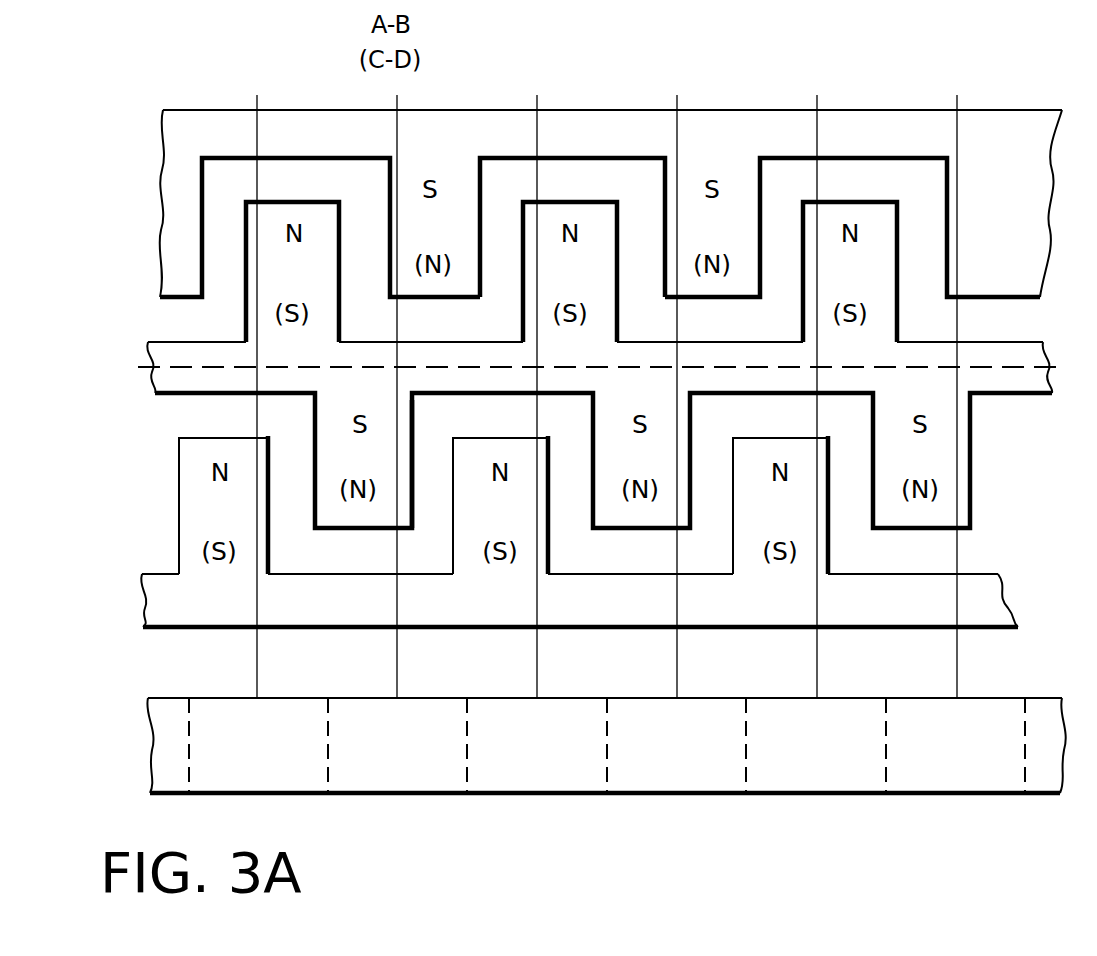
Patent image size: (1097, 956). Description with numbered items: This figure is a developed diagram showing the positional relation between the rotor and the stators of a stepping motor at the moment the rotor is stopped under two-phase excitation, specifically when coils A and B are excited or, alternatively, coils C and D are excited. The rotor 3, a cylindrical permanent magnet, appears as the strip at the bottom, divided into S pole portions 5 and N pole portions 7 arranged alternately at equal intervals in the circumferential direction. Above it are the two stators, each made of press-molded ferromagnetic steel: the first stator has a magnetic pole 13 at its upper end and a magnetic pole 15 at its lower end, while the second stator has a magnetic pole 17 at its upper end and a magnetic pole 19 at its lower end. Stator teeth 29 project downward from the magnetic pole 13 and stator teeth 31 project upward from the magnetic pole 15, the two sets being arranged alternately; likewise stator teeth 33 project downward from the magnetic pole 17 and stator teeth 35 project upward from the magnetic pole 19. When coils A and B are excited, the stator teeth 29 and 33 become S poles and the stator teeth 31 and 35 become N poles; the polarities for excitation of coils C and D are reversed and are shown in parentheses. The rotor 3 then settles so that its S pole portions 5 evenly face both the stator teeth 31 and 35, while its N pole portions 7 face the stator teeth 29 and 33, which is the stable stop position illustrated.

The rotor 3 is at (606, 777).
The S pole portions 5 is at (590, 781).
The N pole portions 7 is at (442, 781).
The magnetic pole 13 is at (293, 129).
The magnetic pole 15 is at (373, 358).
The magnetic pole 17 is at (423, 377).
The magnetic pole 19 is at (462, 606).
The stator teeth 29 is at (462, 189).
The stator teeth 31 is at (535, 272).
The stator teeth 33 is at (402, 496).
The stator teeth 35 is at (572, 493).